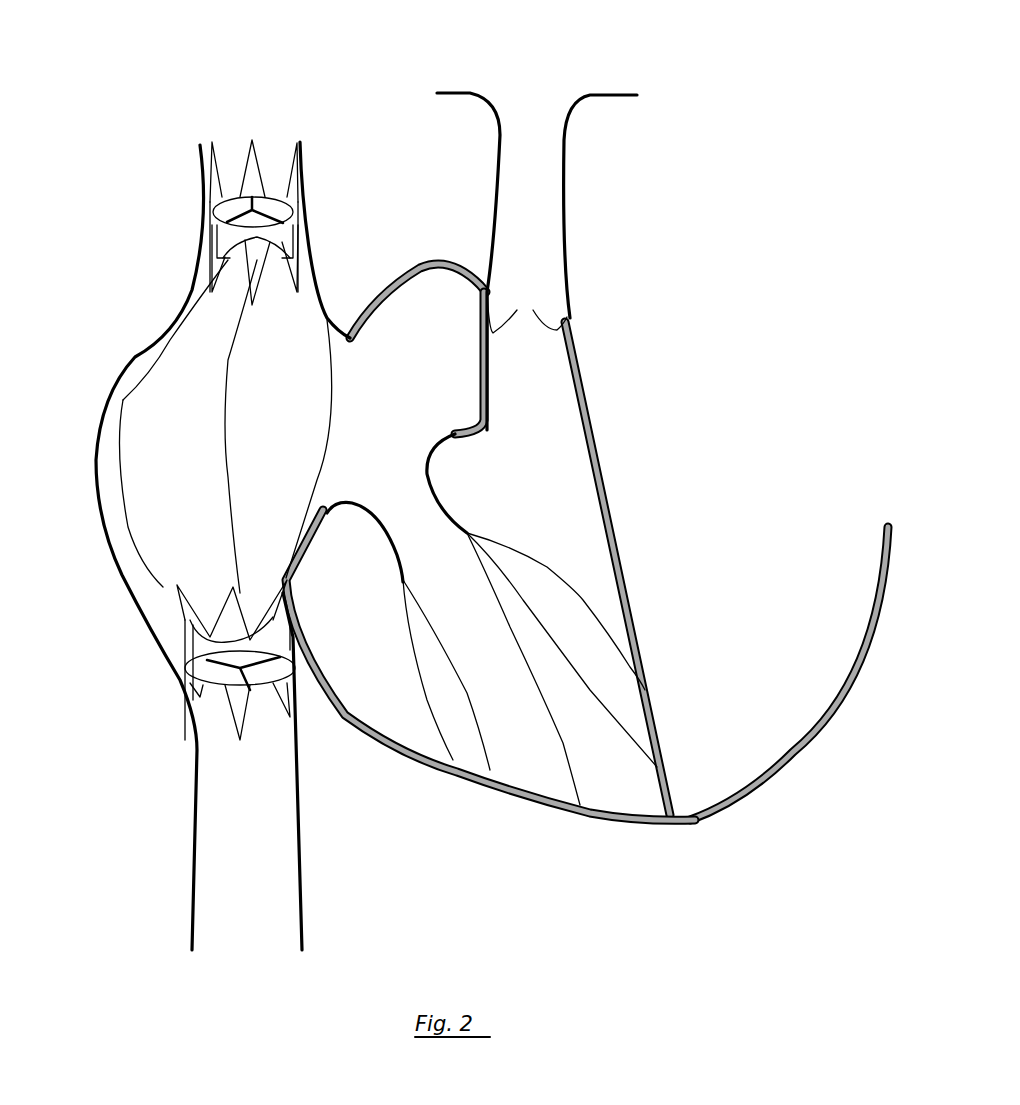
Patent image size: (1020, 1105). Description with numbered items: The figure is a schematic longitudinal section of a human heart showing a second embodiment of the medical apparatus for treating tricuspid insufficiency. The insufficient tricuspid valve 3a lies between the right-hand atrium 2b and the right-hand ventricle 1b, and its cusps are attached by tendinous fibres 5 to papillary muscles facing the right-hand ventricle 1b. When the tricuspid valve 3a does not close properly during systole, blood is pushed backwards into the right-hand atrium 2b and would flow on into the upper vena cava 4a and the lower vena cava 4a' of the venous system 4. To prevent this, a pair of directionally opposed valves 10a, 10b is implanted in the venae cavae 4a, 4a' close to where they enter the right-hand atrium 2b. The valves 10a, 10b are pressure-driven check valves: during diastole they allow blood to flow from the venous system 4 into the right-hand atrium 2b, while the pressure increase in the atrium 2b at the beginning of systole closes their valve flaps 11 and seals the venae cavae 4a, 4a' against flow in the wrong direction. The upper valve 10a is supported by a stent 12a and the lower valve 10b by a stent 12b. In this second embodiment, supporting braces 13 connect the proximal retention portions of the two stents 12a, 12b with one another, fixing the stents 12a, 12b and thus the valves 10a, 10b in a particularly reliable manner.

The venous system 4 is at (235, 148).
The upper vena cava 4a is at (239, 313).
The lower vena cava 4a' is at (318, 771).
The valve flaps 11 is at (233, 212).
The stent 12a is at (225, 265).
The valve 10a is at (257, 212).
The right-hand atrium 2b is at (170, 405).
The supporting braces 13 is at (165, 583).
The stent 12b is at (247, 703).
The valve 10b is at (240, 668).
The tricuspid valve 3a is at (446, 500).
The right-hand ventricle 1b is at (553, 494).
The tendinous fibres 5 is at (583, 600).